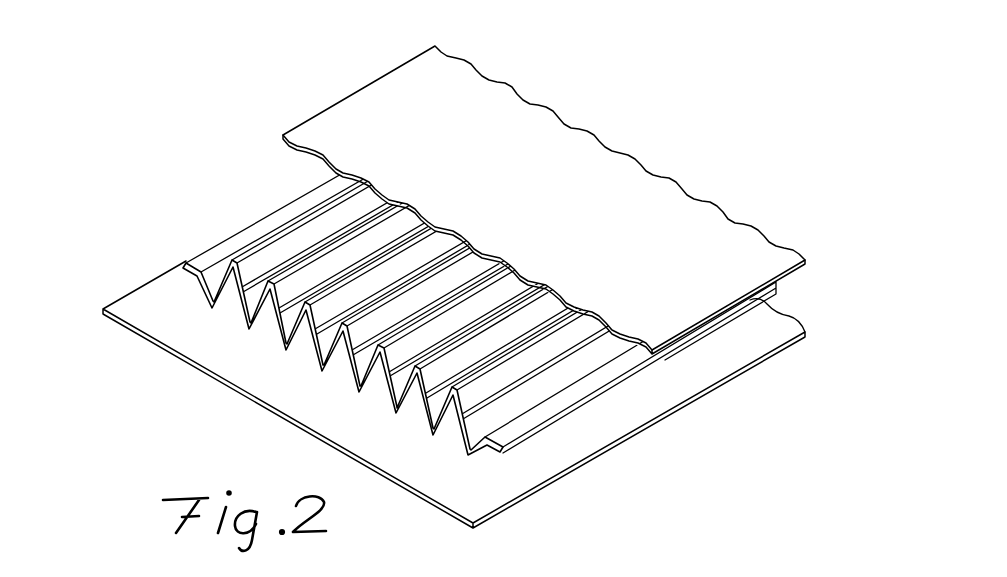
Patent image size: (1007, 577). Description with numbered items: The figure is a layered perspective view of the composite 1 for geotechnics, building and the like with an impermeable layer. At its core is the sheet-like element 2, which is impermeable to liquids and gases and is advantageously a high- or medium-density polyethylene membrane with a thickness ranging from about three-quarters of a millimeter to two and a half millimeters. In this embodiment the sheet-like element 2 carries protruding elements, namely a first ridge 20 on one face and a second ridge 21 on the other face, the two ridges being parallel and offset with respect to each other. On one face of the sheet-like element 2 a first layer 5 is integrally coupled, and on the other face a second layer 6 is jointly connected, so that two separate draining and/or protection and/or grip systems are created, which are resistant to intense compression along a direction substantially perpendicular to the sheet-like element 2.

The composite 1 is at (445, 282).
The sheet-like element 2 is at (468, 278).
The first ridge 20 is at (310, 273).
The second ridge 21 is at (290, 344).
The first layer 5 is at (365, 102).
The second layer 6 is at (158, 307).